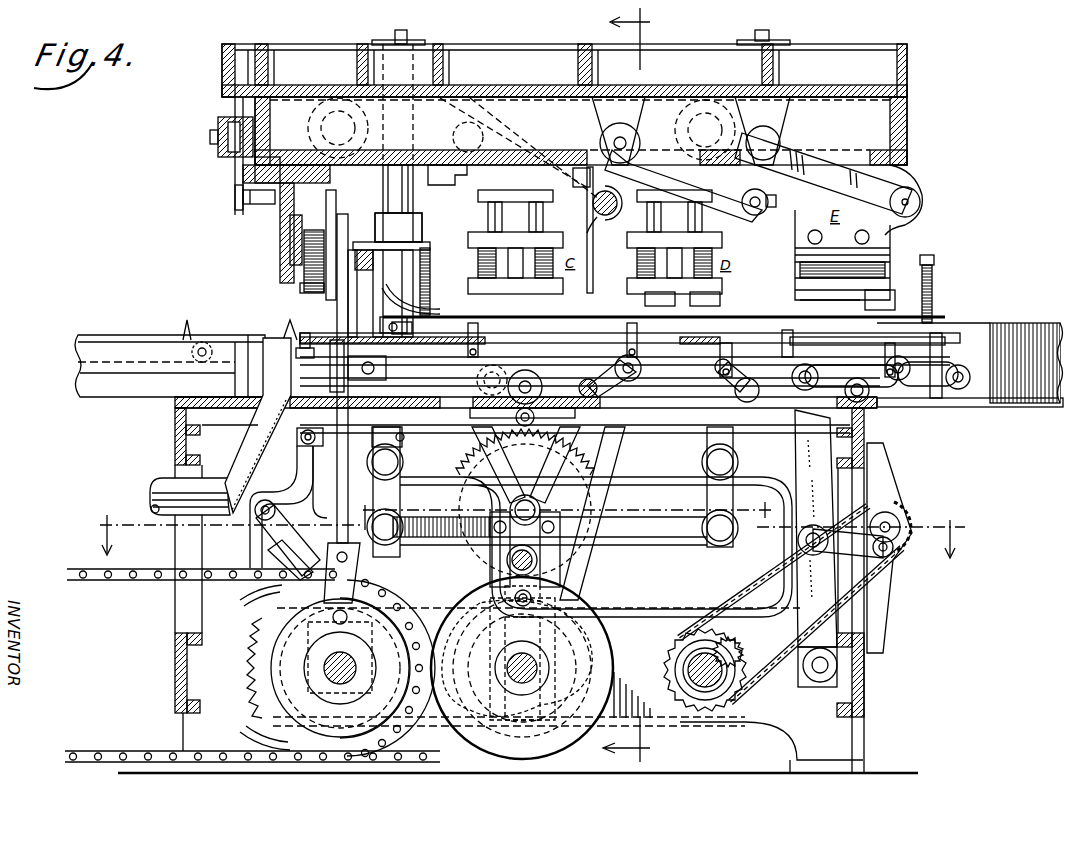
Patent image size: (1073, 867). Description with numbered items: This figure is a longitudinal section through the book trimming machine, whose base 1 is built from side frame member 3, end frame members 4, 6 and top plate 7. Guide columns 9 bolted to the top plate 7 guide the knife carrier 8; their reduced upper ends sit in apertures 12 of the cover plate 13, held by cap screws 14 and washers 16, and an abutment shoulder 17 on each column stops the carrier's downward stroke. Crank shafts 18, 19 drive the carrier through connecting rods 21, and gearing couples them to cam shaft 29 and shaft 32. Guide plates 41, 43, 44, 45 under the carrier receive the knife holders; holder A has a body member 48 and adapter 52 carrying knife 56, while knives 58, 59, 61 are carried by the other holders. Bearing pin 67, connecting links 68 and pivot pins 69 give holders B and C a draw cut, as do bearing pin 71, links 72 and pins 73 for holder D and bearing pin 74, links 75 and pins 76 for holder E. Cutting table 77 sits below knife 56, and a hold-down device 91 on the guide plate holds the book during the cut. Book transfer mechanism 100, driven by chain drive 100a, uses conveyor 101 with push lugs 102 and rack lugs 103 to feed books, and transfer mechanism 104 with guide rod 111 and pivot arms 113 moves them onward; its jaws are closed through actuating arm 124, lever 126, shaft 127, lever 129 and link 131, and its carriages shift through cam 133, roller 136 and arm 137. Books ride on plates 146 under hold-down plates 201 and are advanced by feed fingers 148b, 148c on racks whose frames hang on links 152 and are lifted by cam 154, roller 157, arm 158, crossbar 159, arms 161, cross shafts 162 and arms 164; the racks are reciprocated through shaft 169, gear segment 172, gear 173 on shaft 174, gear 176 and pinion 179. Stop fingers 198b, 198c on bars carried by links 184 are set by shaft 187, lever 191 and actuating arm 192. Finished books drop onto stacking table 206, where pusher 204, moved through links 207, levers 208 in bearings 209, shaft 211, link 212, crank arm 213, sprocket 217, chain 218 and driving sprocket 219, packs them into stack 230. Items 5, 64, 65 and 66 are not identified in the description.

The flat top base 1 is at (165, 437).
The side frame member 3 is at (742, 724).
The end frame member 4 is at (175, 448).
The section line 5 is at (532, 525).
The end frame member 6 is at (633, 381).
The top plate 7 is at (175, 400).
The knife carrier 8 is at (918, 134).
The guide columns 9 is at (278, 232).
The apertures 12 is at (382, 42).
The cover plate 13 is at (918, 69).
The cap screws 14 is at (401, 30).
The washers 16 is at (415, 40).
The abutment shoulder 17 is at (414, 212).
The crank shaft 18 is at (338, 670).
The crank shaft 19 is at (668, 670).
The connecting rods 21 is at (354, 216).
The cam shaft 29 is at (527, 688).
The shaft 32 is at (512, 562).
The knife holder guide plate 41 is at (243, 178).
The knife holder guide plate 43 is at (462, 186).
The knife holder guide plate 44 is at (652, 175).
The knife holder guide plate 45 is at (769, 187).
The body member 48 is at (273, 221).
The adapter 52 is at (290, 248).
The knife 56 is at (304, 265).
The knife 58 is at (566, 278).
The knife 59 is at (700, 292).
The knife 61 is at (868, 292).
The block 64 is at (253, 168).
The bolt 65 is at (235, 198).
The bearing block 66 is at (217, 133).
The bearing pin 67 is at (606, 222).
The connecting links 68 is at (512, 143).
The pivot pins 69 is at (483, 134).
The bearing pin 71 is at (751, 202).
The connecting links 72 is at (690, 132).
The pivot pins 73 is at (623, 136).
The bearing pin 74 is at (922, 202).
The connecting links 75 is at (813, 150).
The pivot pins 76 is at (777, 140).
The cutting table 77 is at (306, 332).
The hold-down device 91 is at (292, 295).
The book transfer mechanism 100 is at (105, 335).
The chain drive 100a is at (70, 584).
The endless conveyor 101 is at (72, 356).
The push lugs 102 is at (183, 325).
The push lugs 103 is at (283, 330).
The book transfer mechanism 104 is at (412, 330).
The guide rod 111 is at (358, 366).
The pivot arms 113 is at (404, 437).
The actuating arm 124 is at (278, 538).
The lever 126 is at (288, 507).
The shaft 127 is at (306, 447).
The lever 129 is at (404, 466).
The connecting link 131 is at (404, 455).
The cam 133 is at (270, 660).
The roller 136 is at (262, 626).
The actuating arm 137 is at (385, 540).
The flat plates 146 is at (930, 337).
The feed fingers 148b is at (694, 330).
The feed fingers 148c is at (792, 340).
The connecting links 152 is at (735, 392).
The cam 154 is at (468, 730).
The roller 157 is at (505, 596).
The actuating arm 158 is at (505, 555).
The crossbar 159 is at (645, 538).
The supporting arms 161 is at (706, 497).
The cross shafts 162 is at (703, 460).
The upper supporting arms 164 is at (708, 440).
The shaft 169 is at (525, 495).
The gear segment 172 is at (480, 470).
The gear 173 is at (516, 418).
The shaft 174 is at (500, 444).
The gear 176 is at (530, 370).
The driven pinion 179 is at (495, 365).
The connecting links 184 is at (612, 390).
The shaft 187 is at (582, 387).
The lever 191 is at (612, 440).
The actuating arm 192 is at (596, 498).
The stop fingers 198b is at (723, 345).
The stop fingers 198c is at (884, 350).
The hold-down plates 201 is at (622, 316).
The pusher 204 is at (942, 335).
The receiving plate 206 is at (995, 408).
The connecting links 207 is at (948, 388).
The lever arms 208 is at (798, 455).
The bearings 209 is at (815, 683).
The shaft 211 is at (803, 542).
The connecting link 212 is at (880, 565).
The crank arm 213 is at (893, 552).
The sprocket 217 is at (898, 515).
The sprocket chain 218 is at (746, 588).
The driving sprocket 219 is at (733, 652).
The stack of books 230 is at (1040, 325).